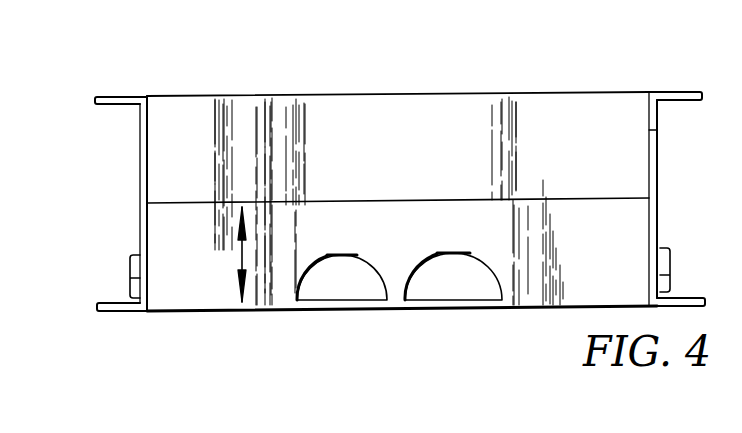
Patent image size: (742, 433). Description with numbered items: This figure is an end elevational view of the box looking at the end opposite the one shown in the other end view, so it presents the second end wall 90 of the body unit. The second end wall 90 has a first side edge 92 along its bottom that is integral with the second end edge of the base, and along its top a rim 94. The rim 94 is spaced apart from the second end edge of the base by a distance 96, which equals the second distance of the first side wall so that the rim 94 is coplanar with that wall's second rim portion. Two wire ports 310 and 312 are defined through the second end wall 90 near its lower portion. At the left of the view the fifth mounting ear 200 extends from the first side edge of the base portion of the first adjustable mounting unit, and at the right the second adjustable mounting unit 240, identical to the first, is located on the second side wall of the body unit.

The second end wall 90 is at (379, 118).
The first side edge 92 is at (537, 310).
The rim 94 is at (173, 203).
The distance 96 is at (243, 262).
The fifth mounting ear 200 is at (115, 97).
The second adjustable mounting unit 240 is at (680, 92).
The wire port 310 is at (340, 282).
The wire port 312 is at (442, 280).